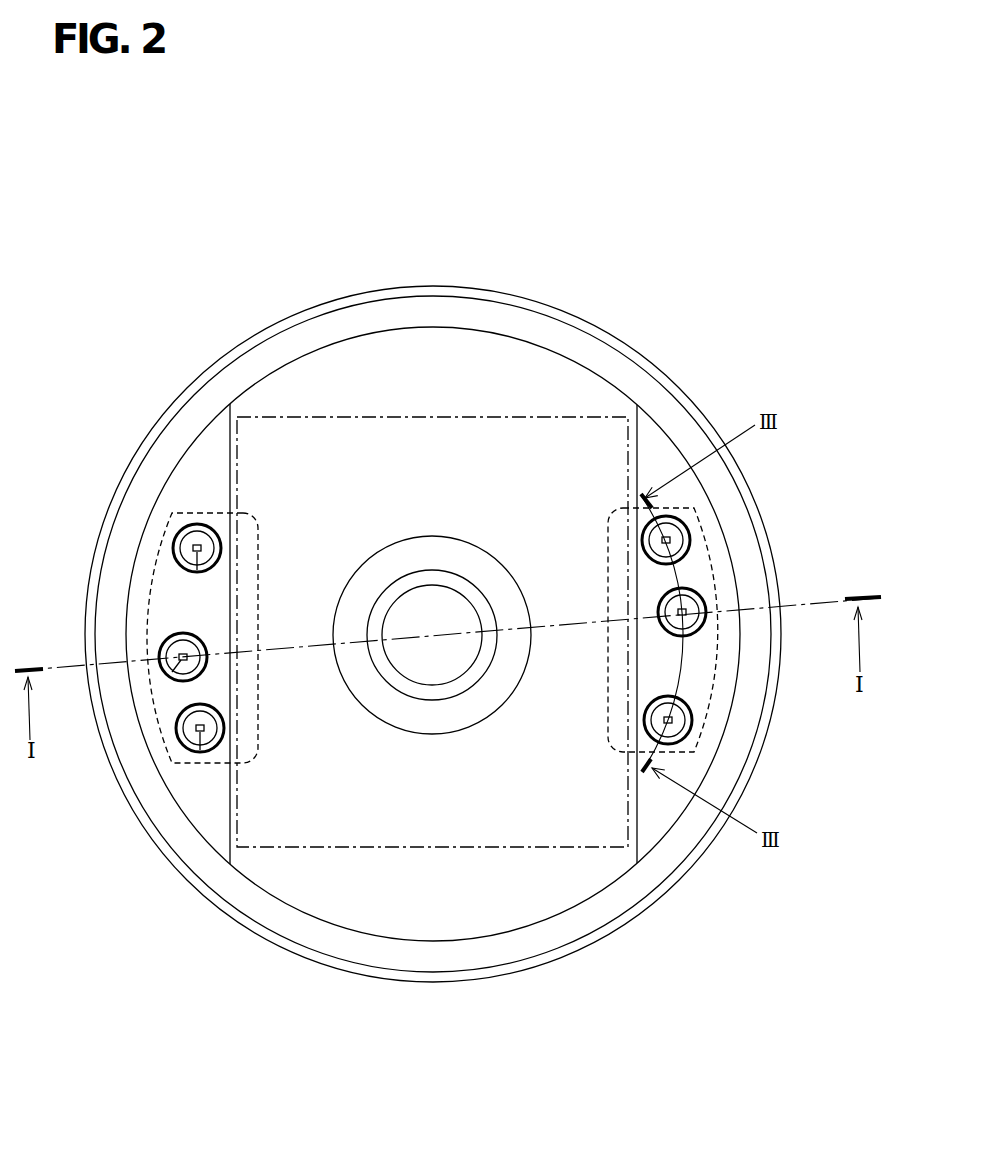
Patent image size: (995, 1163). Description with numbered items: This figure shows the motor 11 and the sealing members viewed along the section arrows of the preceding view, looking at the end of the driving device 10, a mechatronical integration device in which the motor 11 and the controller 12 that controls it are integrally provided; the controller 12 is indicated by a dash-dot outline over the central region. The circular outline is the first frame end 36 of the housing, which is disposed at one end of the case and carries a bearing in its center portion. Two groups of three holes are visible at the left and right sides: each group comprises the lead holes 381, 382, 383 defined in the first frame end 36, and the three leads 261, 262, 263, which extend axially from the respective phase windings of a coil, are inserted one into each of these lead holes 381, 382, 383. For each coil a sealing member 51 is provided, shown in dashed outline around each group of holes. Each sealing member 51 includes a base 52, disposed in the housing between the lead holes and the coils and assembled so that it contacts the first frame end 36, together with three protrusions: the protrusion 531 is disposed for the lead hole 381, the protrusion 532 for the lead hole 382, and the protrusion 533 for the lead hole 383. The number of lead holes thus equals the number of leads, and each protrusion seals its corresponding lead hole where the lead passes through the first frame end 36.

The driving device 10 is at (183, 340).
The motor 11 is at (178, 393).
The controller 12 is at (562, 416).
The first frame end 36 is at (298, 310).
The sealing member 51 is at (212, 772).
The base 52 is at (209, 512).
The lead 261 is at (180, 525).
The lead 262 is at (163, 638).
The lead 263 is at (178, 728).
The lead hole 381 is at (182, 565).
The lead hole 382 is at (170, 675).
The lead hole 383 is at (193, 745).
The protrusion 531 is at (193, 549).
The protrusion 532 is at (179, 657).
The protrusion 533 is at (200, 752).